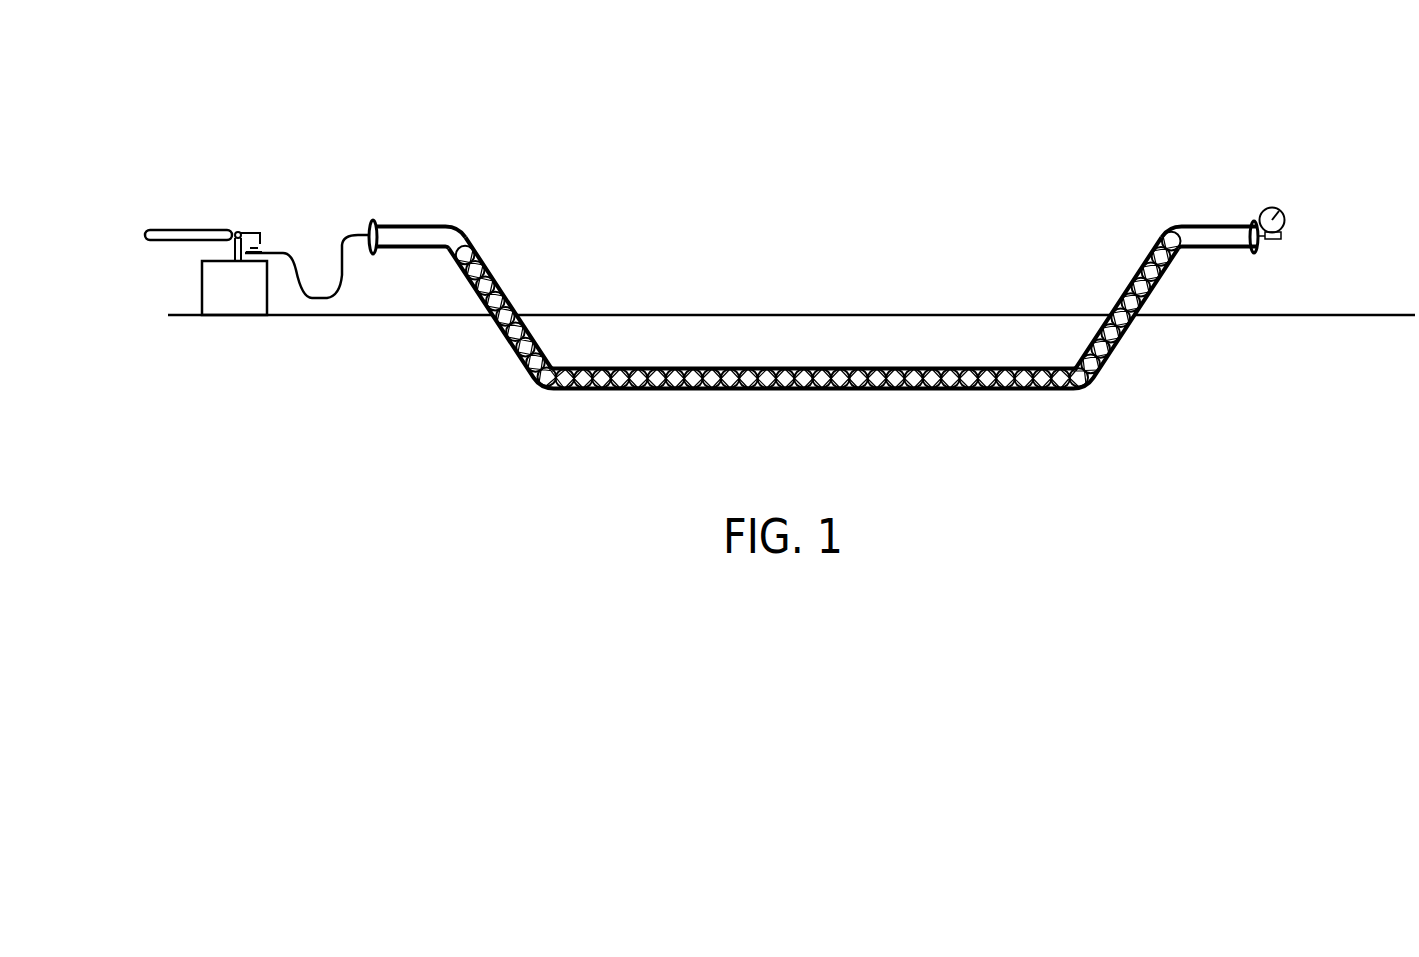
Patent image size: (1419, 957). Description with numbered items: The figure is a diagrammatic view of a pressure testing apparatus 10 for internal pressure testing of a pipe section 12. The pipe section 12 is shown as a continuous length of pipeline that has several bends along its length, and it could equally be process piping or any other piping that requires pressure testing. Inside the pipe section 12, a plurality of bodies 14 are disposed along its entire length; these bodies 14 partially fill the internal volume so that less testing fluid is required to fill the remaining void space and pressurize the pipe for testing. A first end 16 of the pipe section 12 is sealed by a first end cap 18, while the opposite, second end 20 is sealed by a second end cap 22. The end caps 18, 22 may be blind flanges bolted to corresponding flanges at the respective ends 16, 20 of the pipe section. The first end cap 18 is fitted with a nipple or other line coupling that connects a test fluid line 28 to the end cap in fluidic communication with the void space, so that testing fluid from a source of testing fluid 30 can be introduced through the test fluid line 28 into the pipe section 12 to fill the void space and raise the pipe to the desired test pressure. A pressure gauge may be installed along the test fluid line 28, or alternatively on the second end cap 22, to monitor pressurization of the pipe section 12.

The pressure testing apparatus 10 is at (998, 138).
The pipe section 12 is at (1008, 392).
The bodies 14 is at (587, 381).
The first end 16 is at (421, 225).
The first end cap 18 is at (372, 221).
The second end 20 is at (1212, 223).
The second end cap 22 is at (1260, 249).
The test fluid line 28 is at (322, 298).
The source of testing fluid 30 is at (225, 308).